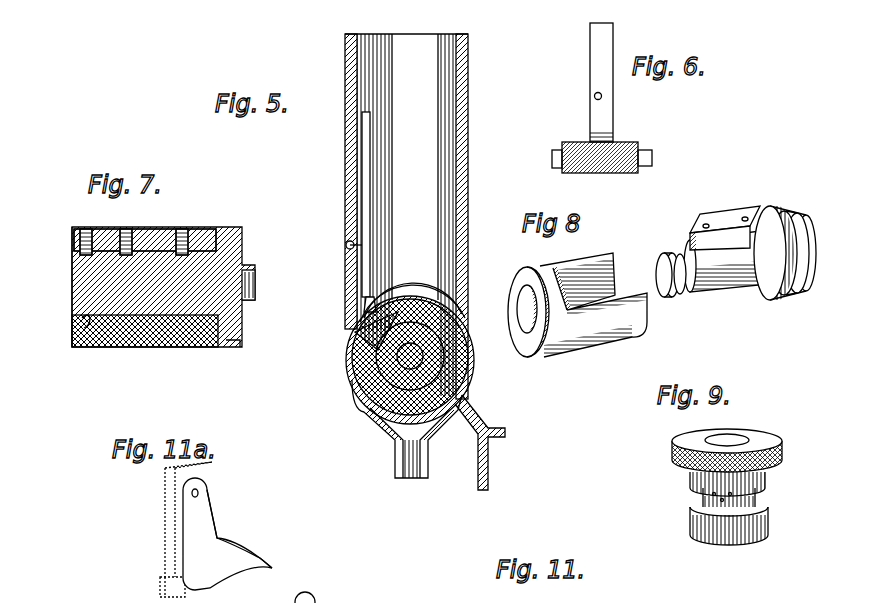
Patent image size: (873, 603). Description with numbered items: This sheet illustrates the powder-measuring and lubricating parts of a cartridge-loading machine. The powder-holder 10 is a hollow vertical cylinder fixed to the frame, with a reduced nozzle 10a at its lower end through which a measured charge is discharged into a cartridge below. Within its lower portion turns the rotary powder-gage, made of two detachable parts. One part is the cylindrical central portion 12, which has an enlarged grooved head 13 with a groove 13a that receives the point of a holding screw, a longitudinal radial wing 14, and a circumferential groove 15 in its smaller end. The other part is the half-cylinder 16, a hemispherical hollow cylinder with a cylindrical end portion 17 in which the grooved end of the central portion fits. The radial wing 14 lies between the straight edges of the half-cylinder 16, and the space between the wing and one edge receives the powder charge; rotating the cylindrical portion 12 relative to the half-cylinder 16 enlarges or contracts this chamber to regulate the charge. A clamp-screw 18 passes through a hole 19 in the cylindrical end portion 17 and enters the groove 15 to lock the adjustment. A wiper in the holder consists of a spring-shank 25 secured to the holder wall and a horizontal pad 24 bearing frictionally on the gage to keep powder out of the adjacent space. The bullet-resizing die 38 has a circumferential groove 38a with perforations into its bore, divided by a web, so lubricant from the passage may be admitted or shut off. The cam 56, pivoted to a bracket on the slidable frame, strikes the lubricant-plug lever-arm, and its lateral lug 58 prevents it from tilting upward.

In FIG. 5, the powder-holder 10 is at (390, 121).
In FIG. 5, the reduced nozzle 10a is at (397, 462).
In FIG. 5, the cylindrical central portion 12 is at (388, 399).
In FIG. 8, the cylindrical central portion 12 is at (722, 276).
In FIG. 5, the grooved head 13 is at (412, 336).
In FIG. 7, the grooved head 13 is at (243, 266).
In FIG. 8, the grooved head 13 is at (802, 270).
In FIG. 7, the groove 13a is at (232, 345).
In FIG. 8, the groove 13a is at (786, 292).
In FIG. 5, the radial wing 14 is at (372, 322).
In FIG. 7, the radial wing 14 is at (158, 230).
In FIG. 8, the radial wing 14 is at (716, 222).
In FIG. 7, the circumferential groove 15 is at (84, 327).
In FIG. 8, the circumferential groove 15 is at (672, 256).
In FIG. 7, the half-cylinder 16 is at (155, 347).
In FIG. 8, the half-cylinder 16 is at (577, 312).
In FIG. 5, the cylindrical end portion 17 is at (462, 358).
In FIG. 7, the cylindrical end portion 17 is at (72, 243).
In FIG. 8, the cylindrical end portion 17 is at (546, 295).
In FIG. 7, the clamp-screw 18 is at (84, 229).
In FIG. 8, the hole 19 is at (537, 270).
In FIG. 5, the horizontal pad 24 is at (388, 285).
In FIG. 6, the horizontal pad 24 is at (600, 176).
In FIG. 5, the spring-shank 25 is at (362, 228).
In FIG. 6, the spring-shank 25 is at (590, 90).
In FIG. 9, the bullet-resizing die 38 is at (690, 478).
In FIG. 9, the circumferential groove 38a is at (756, 498).
In FIG. 11A, the cam 56 is at (215, 543).
In FIG. 11A, the lateral lug 58 is at (170, 553).